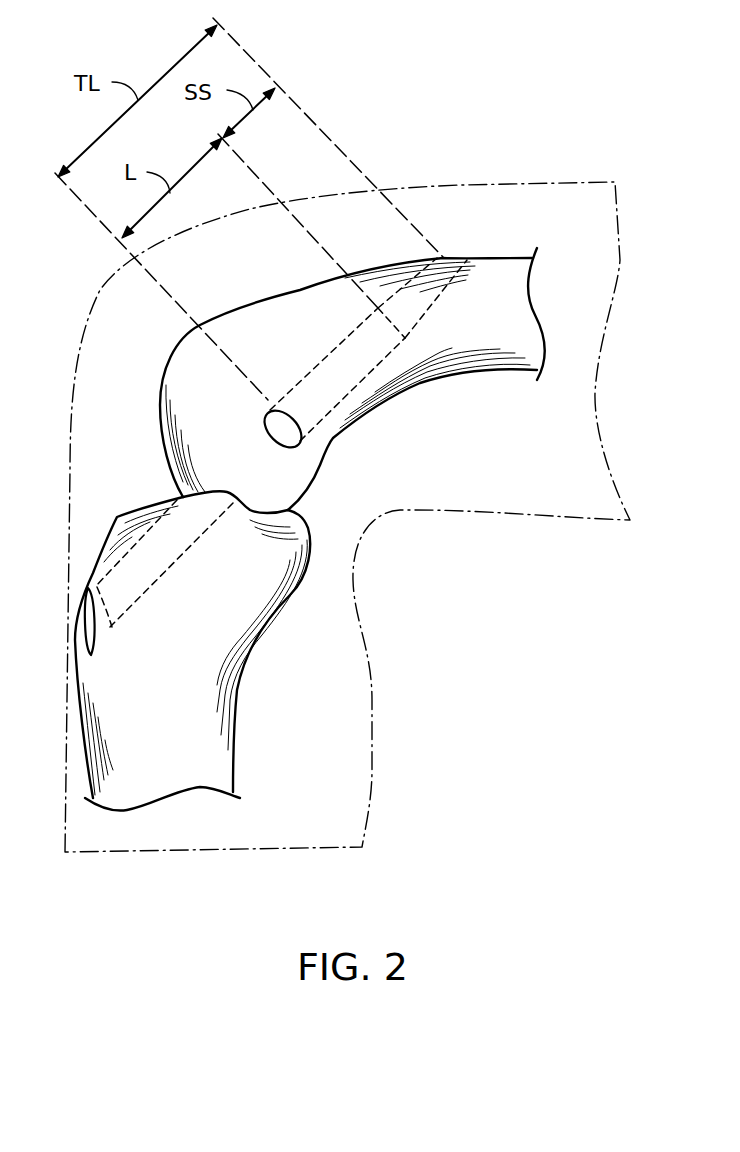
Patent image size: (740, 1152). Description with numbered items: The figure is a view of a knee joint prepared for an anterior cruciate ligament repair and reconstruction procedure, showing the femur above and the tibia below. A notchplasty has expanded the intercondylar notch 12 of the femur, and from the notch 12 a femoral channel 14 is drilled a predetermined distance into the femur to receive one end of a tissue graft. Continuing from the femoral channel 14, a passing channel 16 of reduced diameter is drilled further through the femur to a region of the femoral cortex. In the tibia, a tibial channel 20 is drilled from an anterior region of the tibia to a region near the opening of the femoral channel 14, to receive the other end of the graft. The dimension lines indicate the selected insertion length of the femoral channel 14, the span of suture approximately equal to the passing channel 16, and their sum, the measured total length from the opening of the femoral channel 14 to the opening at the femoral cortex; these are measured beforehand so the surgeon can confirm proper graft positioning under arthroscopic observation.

The intercondylar notch 12 is at (250, 496).
The femoral channel 14 is at (345, 365).
The passing channel 16 is at (425, 292).
The tibial channel 20 is at (140, 522).